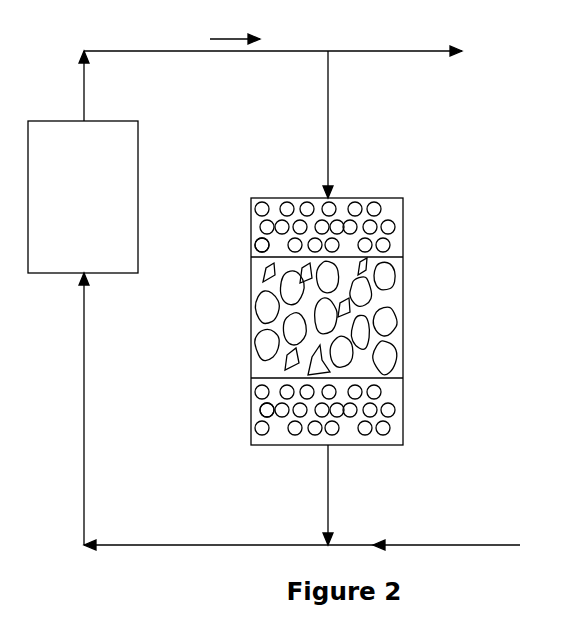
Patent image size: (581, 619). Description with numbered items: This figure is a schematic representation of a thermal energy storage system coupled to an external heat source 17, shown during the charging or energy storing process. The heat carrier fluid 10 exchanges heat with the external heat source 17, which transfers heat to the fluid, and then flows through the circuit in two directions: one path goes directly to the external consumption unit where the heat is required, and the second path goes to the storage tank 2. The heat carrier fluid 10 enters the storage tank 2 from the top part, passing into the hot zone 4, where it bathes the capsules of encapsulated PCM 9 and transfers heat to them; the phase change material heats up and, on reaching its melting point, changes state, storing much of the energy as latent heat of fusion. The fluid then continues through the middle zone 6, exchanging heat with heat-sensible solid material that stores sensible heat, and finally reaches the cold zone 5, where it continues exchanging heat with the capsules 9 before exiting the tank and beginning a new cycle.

The heat carrier fluid 10 is at (235, 30).
The external heat source 17 is at (83, 197).
The storage tank 2 is at (370, 198).
The hot zone 4 is at (397, 237).
The middle zone 6 is at (385, 320).
The cold zone 5 is at (397, 420).
The capsules of encapsulated PCM 9 is at (257, 248).